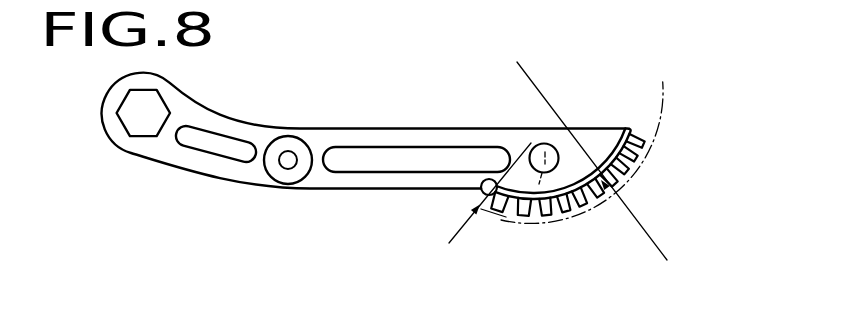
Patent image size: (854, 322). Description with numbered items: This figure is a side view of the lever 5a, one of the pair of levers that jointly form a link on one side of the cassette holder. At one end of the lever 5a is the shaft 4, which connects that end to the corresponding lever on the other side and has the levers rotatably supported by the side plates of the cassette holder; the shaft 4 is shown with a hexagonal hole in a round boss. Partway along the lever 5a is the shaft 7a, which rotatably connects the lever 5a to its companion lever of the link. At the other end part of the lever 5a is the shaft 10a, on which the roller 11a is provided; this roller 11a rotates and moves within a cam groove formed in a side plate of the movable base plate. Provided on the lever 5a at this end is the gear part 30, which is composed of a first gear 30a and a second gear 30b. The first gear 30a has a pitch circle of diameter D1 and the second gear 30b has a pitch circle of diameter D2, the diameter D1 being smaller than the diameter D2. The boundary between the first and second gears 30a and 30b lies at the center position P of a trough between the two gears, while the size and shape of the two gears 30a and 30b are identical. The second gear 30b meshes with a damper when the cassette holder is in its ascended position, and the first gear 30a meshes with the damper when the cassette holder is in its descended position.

The shaft 4 is at (143, 118).
The shaft 7a is at (288, 150).
The lever 5a is at (393, 146).
The shaft 10a is at (493, 122).
The roller 11a is at (540, 144).
The gear part 30 is at (567, 222).
The first gear 30a is at (508, 216).
The second gear 30b is at (602, 208).
The center position of trough P is at (538, 186).
The pitch circle diameter D1 is at (475, 193).
The pitch circle diameter D2 is at (598, 161).